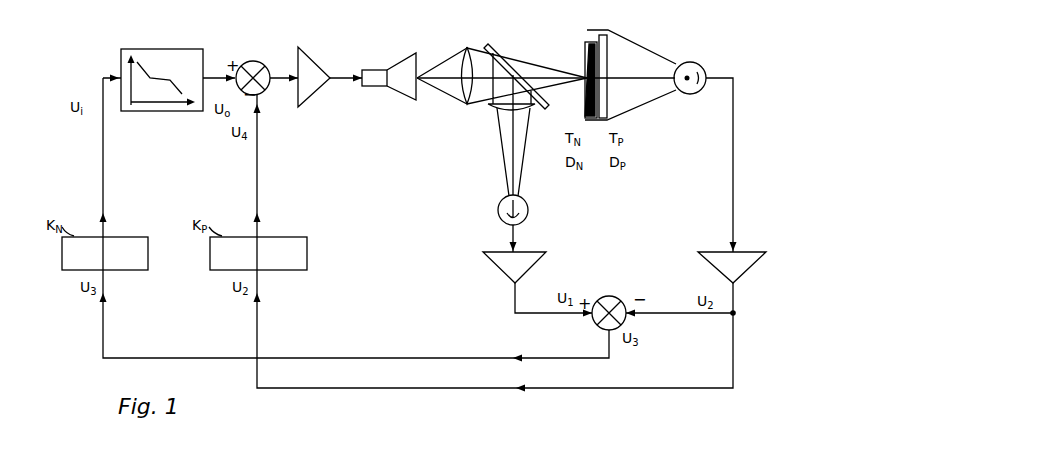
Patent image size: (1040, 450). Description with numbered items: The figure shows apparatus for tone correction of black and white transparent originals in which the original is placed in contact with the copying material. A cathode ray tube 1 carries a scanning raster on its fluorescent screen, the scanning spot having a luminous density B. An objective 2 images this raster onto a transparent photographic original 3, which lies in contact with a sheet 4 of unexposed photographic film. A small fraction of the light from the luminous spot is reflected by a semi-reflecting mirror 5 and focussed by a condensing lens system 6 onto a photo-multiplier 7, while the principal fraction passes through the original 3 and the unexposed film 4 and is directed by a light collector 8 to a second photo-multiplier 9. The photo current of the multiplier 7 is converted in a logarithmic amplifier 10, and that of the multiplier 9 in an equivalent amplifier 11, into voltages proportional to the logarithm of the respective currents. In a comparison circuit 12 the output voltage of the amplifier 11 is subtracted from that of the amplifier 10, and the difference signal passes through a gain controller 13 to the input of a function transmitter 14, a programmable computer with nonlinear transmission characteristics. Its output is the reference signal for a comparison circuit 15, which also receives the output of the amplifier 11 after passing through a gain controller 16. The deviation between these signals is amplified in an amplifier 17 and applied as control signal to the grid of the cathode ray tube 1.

The cathode ray tube 1 is at (384, 69).
The luminous density of the scanning spot B is at (418, 100).
The objective 2 is at (458, 57).
The transparent photographic original 3 is at (585, 62).
The sheet of unexposed photographic film 4 is at (607, 57).
The semi-reflecting mirror 5 is at (491, 53).
The condensing lens system 6 is at (534, 110).
The photo-multiplier 7 is at (529, 209).
The light collector 8 is at (654, 53).
The second photo-multiplier 9 is at (702, 64).
The logarithmic amplifier 10 is at (487, 261).
The equivalent amplifier 11 is at (750, 270).
The comparison circuit 12 is at (608, 296).
The gain controller 13 is at (140, 271).
The function transmitter 14 is at (164, 49).
The comparison circuit 15 is at (253, 60).
The gain controller 16 is at (298, 271).
The amplifier 17 is at (322, 58).